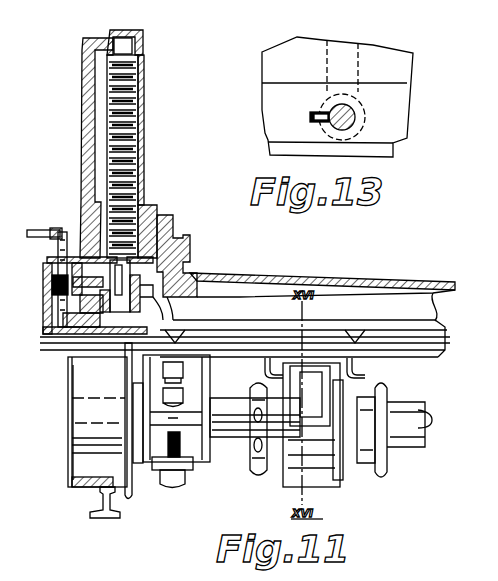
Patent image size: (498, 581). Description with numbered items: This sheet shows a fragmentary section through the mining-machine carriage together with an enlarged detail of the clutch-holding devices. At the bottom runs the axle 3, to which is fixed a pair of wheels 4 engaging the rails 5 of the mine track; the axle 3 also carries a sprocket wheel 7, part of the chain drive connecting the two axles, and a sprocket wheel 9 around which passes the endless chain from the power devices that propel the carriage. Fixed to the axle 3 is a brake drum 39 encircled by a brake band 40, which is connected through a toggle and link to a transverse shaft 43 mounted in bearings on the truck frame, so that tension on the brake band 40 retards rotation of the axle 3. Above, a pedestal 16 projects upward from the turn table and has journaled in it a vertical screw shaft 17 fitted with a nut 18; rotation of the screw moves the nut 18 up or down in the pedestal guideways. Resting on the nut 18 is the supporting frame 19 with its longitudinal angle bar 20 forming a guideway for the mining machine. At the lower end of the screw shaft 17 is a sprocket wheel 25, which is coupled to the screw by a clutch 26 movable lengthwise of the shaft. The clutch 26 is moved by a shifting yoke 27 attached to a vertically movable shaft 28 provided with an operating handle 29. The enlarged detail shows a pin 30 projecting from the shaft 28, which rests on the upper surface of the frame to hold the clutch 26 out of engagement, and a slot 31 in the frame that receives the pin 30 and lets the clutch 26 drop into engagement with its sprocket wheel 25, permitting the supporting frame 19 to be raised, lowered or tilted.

In FIG. 11, the axle 3 is at (412, 413).
In FIG. 11, the wheels 4 is at (83, 483).
In FIG. 11, the rails 5 is at (115, 514).
In FIG. 11, the sprocket wheel 7 is at (262, 475).
In FIG. 11, the sprocket wheel 9 is at (388, 467).
In FIG. 11, the pedestal 16 is at (82, 118).
In FIG. 11, the screw shaft 17 is at (141, 104).
In FIG. 11, the nut 18 is at (150, 202).
In FIG. 11, the supporting frame 19 is at (268, 273).
In FIG. 11, the angle bar 20 is at (191, 252).
In FIG. 11, the sprocket wheel 25 is at (43, 330).
In FIG. 11, the clutch 26 is at (143, 287).
In FIG. 11, the shifting yoke 27 is at (45, 284).
In FIG. 11, the shaft 28 is at (62, 232).
In FIG. 13, the shaft 28 is at (353, 115).
In FIG. 11, the operating handle 29 is at (52, 230).
In FIG. 13, the pin 30 is at (320, 110).
In FIG. 13, the slot 31 is at (310, 117).
In FIG. 11, the brake drum 39 is at (343, 477).
In FIG. 11, the brake band 40 is at (303, 470).
In FIG. 11, the transverse shaft 43 is at (243, 432).